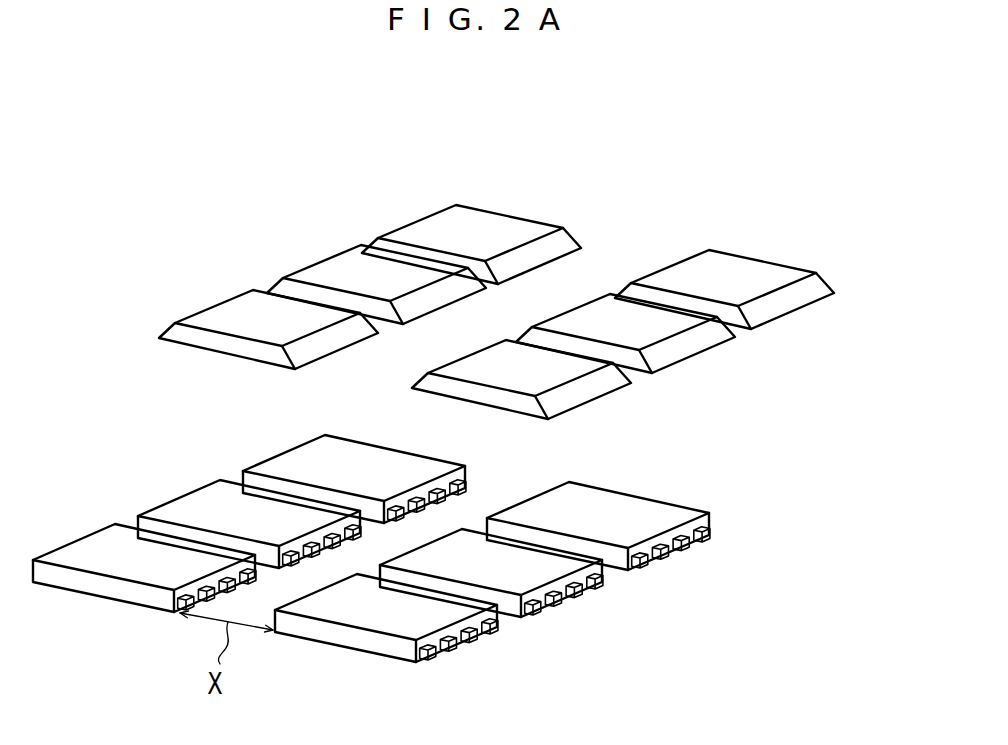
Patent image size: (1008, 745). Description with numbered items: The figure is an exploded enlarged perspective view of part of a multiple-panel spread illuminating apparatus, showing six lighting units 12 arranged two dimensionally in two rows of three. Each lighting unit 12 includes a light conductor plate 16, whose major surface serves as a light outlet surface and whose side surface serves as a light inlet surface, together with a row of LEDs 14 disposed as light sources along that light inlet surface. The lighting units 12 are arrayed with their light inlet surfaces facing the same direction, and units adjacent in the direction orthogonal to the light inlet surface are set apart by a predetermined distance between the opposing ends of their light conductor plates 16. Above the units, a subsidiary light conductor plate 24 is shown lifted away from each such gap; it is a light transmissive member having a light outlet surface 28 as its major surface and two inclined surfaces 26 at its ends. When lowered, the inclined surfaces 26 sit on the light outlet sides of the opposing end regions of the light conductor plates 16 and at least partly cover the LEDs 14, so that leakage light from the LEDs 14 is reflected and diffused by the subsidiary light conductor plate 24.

The lighting unit 12 is at (616, 514).
The LED 14 is at (703, 543).
The light conductor plate 16 is at (612, 507).
The subsidiary light conductor plate 24 is at (739, 252).
The inclined surface 26 is at (668, 263).
The light outlet surface 28 is at (763, 275).